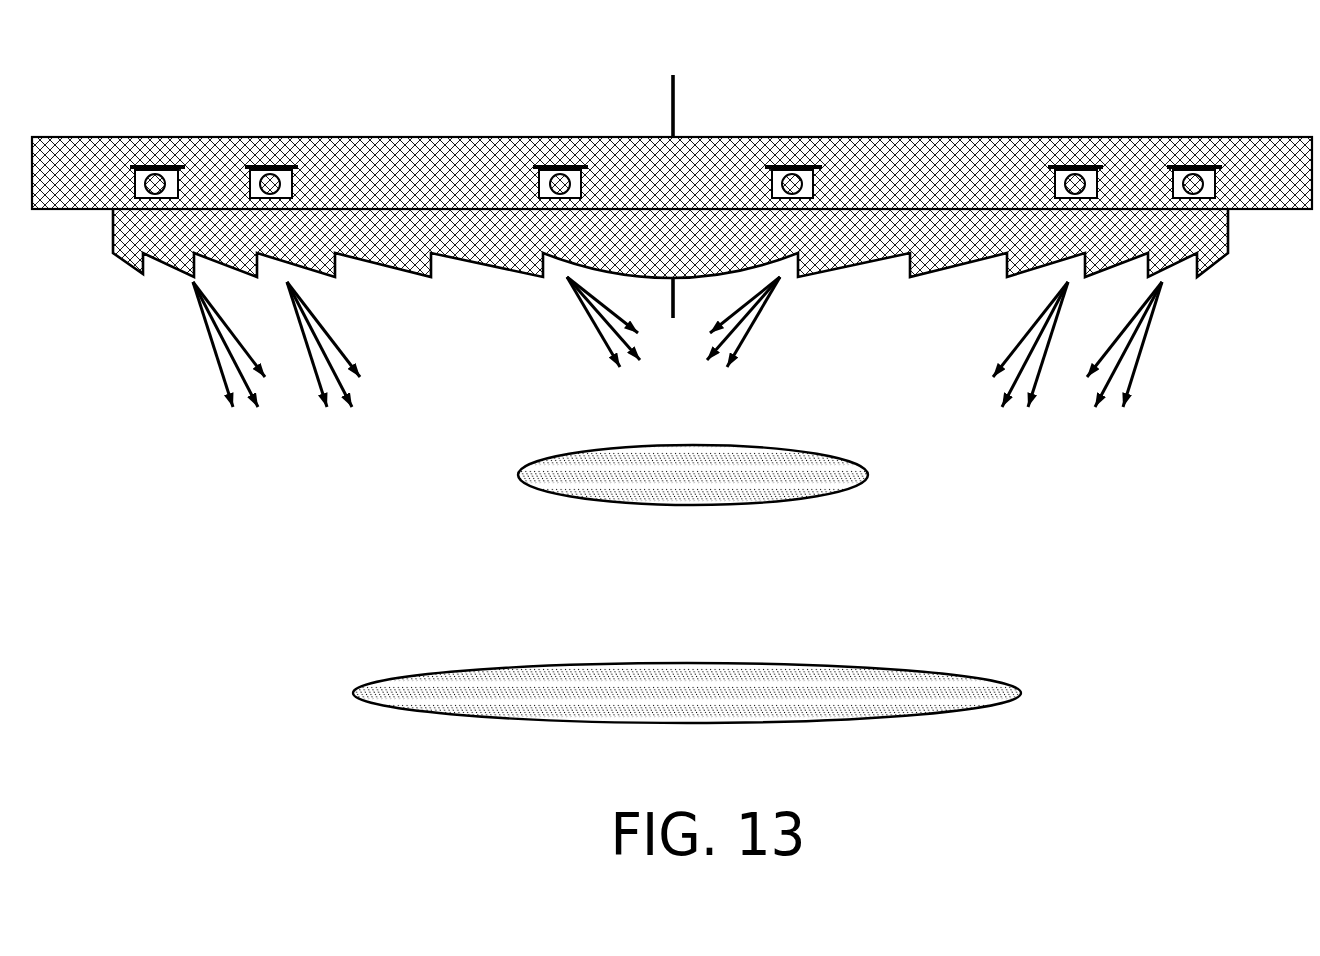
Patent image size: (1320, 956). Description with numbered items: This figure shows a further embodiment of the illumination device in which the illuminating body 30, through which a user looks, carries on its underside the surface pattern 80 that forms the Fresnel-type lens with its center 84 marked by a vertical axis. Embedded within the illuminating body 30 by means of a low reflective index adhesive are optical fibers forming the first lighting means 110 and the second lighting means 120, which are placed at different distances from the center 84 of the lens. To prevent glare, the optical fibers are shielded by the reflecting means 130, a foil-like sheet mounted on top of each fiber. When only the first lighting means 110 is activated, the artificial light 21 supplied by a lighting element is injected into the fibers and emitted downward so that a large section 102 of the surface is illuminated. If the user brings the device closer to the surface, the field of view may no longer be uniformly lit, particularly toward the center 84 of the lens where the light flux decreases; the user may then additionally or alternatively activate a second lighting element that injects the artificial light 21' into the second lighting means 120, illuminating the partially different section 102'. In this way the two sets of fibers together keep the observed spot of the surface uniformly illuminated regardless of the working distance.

The illuminating body 30 is at (1100, 150).
The surface pattern 80 is at (1221, 257).
The center of the Fresnel-type lens 84 is at (673, 180).
The first lighting means 110 is at (147, 173).
The second lighting means 120 is at (550, 173).
The reflecting means 130 is at (775, 173).
The artificial light 21 is at (664, 358).
The artificial light 21' is at (660, 345).
The section of the surface 102 is at (729, 492).
The section of the surface 102' is at (714, 709).